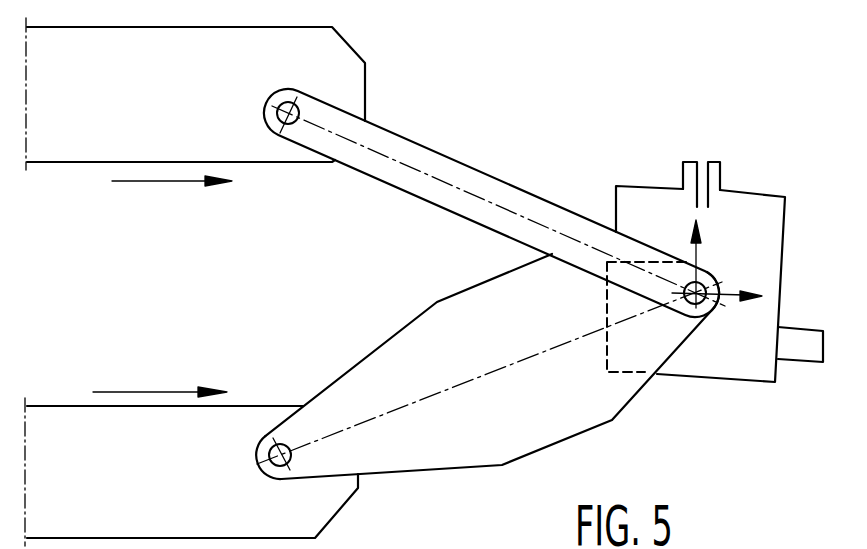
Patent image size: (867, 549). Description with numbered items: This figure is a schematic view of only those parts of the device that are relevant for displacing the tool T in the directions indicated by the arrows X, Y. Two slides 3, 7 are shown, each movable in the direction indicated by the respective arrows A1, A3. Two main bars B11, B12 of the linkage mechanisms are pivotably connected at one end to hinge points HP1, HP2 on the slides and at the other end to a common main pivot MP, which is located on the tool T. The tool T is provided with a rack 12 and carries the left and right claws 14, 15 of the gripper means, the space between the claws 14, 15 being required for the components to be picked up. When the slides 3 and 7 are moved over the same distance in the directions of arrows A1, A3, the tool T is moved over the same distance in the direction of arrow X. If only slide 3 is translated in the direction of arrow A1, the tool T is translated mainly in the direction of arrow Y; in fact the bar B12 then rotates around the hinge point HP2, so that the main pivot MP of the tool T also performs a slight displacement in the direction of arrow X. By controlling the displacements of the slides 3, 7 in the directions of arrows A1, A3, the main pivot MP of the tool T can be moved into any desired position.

The slide 7 is at (86, 135).
The slide 3 is at (53, 427).
The arrow A3 is at (186, 184).
The arrow A1 is at (157, 390).
The hinge point HP2 is at (268, 100).
The hinge point HP1 is at (267, 480).
The main bar B12 is at (407, 152).
The main bar B11 is at (422, 450).
The tool T is at (763, 218).
The left claw 14 is at (687, 172).
The right claw 15 is at (720, 172).
The rack 12 is at (805, 347).
The main pivot MP is at (705, 282).
The arrow Y is at (700, 253).
The arrow X is at (722, 296).